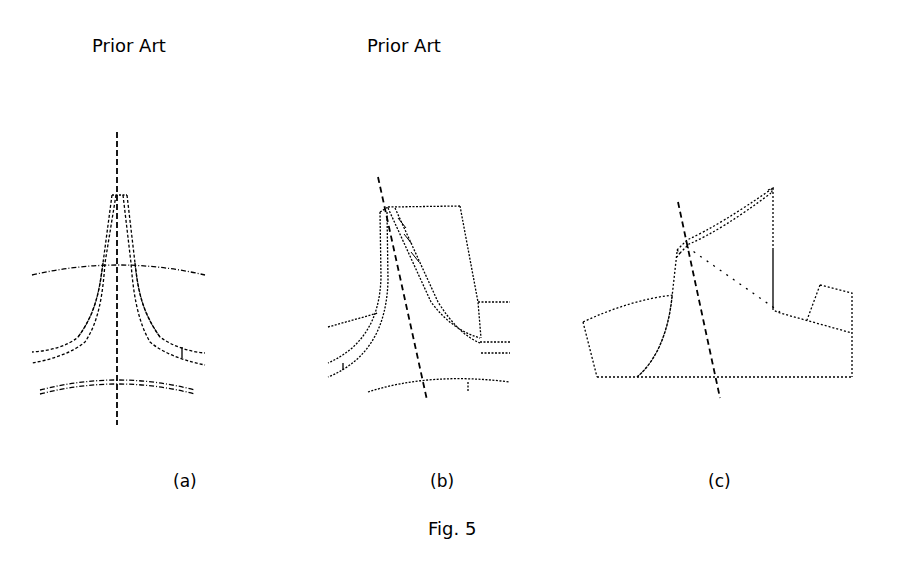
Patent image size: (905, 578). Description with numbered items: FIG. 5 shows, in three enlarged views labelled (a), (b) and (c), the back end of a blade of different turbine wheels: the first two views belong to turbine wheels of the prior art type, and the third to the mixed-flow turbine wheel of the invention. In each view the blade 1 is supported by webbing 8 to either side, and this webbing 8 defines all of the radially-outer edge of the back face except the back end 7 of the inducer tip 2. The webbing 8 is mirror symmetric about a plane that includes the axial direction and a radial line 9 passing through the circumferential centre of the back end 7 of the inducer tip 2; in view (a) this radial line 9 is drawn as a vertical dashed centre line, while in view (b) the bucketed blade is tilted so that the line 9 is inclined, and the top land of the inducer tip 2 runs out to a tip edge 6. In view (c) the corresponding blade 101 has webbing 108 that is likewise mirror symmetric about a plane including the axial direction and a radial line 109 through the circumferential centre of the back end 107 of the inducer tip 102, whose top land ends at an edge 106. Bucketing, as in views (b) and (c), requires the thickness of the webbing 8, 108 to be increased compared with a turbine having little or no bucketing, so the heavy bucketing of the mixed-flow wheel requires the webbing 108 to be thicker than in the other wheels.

The blade 1 is at (112, 292).
The inducer tip 2 is at (415, 205).
The tooth tip edge 6 is at (459, 205).
The back end of the inducer tip 7 is at (115, 195).
The webbing 8 is at (93, 345).
The radial line 9 is at (117, 157).
The gear tooth 101 is at (687, 307).
The inducer tip 102 is at (745, 208).
The tooth tip edge 106 is at (768, 182).
The back end of the inducer tip 107 is at (678, 252).
The webbing 108 is at (755, 328).
The radial line 109 is at (685, 232).